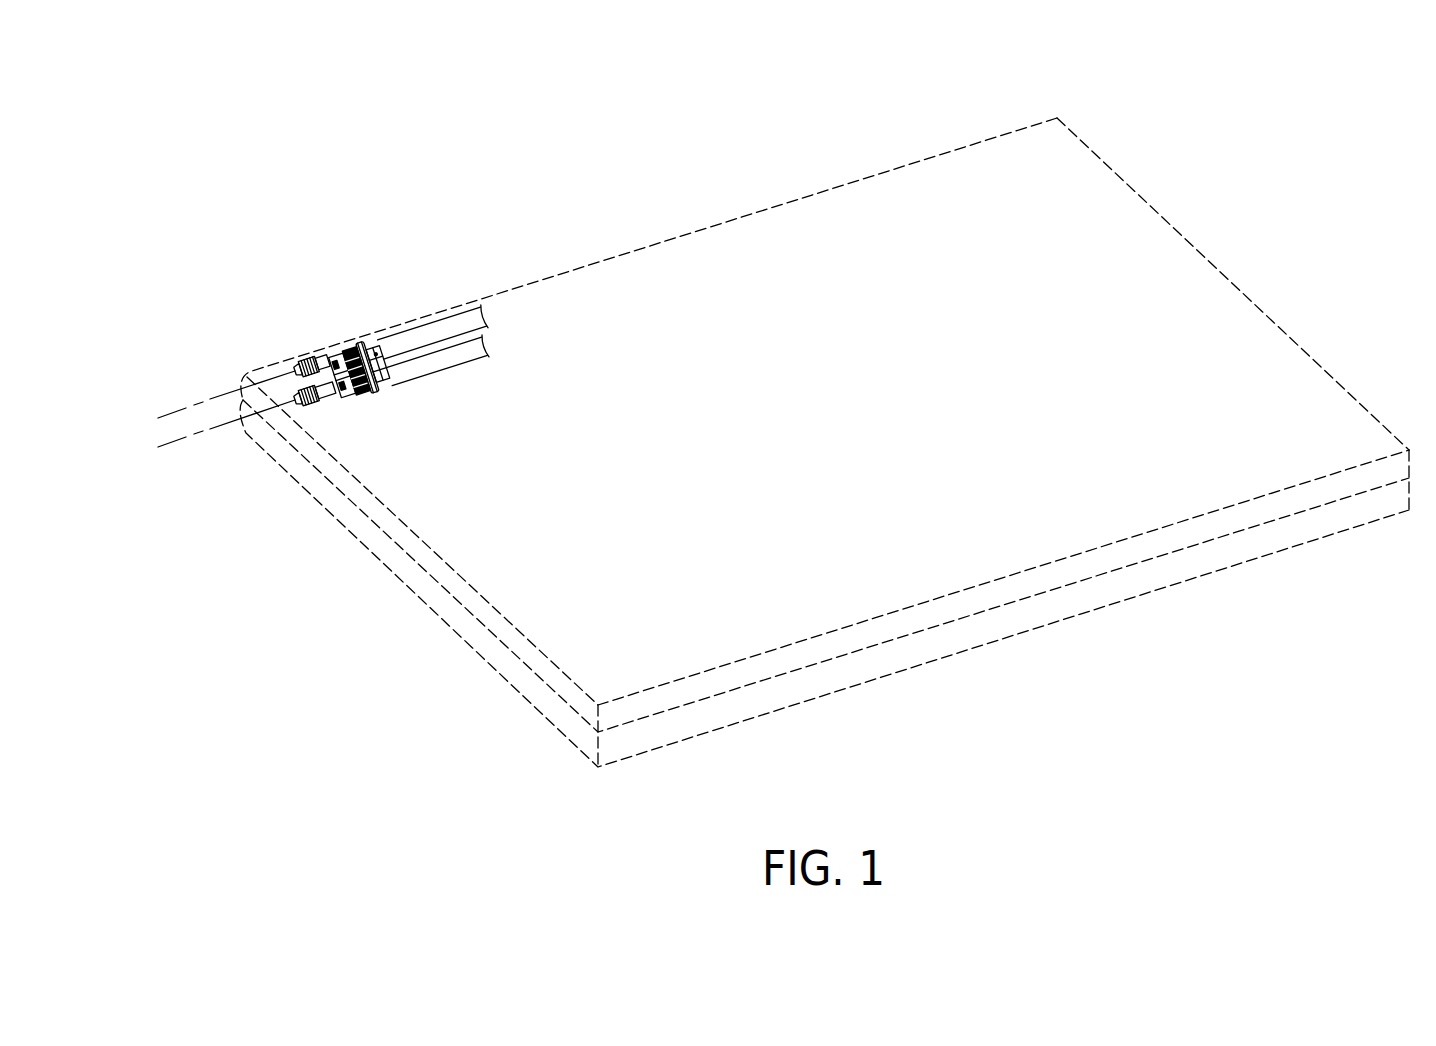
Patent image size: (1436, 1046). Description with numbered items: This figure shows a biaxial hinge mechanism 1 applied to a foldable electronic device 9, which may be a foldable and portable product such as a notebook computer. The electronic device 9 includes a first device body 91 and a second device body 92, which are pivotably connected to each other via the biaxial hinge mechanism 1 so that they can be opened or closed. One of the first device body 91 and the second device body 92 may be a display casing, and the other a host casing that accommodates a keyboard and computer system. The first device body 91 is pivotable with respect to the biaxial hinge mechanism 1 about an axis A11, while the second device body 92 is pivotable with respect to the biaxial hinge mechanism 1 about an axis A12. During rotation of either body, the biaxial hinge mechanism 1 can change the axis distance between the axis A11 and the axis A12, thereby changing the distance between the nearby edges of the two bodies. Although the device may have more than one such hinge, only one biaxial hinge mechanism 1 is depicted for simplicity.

The foldable electronic device 9 is at (331, 141).
The first device body 91 is at (420, 587).
The second device body 92 is at (423, 550).
The biaxial hinge mechanism 1 is at (358, 403).
The axis A11 is at (189, 435).
The axis A12 is at (189, 405).